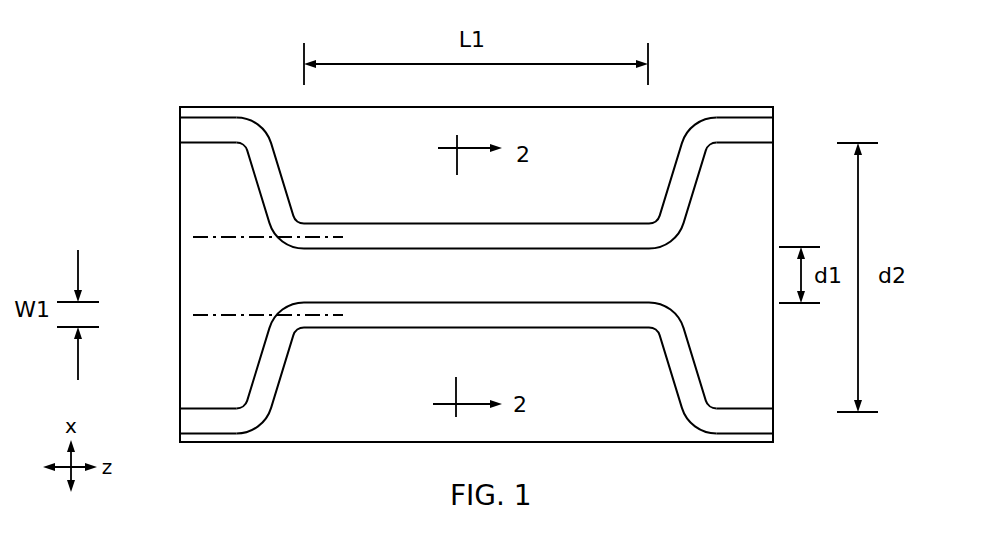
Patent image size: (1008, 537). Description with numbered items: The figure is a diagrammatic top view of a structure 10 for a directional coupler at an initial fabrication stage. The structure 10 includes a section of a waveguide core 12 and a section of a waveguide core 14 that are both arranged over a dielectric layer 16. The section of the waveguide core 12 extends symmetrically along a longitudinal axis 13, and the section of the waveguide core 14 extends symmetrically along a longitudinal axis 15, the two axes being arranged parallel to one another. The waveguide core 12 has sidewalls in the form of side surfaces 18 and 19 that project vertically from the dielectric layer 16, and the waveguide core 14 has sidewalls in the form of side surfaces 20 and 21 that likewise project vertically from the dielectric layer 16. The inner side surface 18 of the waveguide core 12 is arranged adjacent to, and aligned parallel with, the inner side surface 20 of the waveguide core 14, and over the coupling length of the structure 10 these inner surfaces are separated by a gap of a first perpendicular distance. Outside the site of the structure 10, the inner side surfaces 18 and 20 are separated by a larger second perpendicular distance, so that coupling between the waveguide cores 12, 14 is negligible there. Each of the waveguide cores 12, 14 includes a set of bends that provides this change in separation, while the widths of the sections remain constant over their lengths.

The structure 10 is at (152, 62).
The waveguide core 12 is at (755, 130).
The longitudinal axis 13 is at (193, 237).
The waveguide core 14 is at (738, 419).
The longitudinal axis 15 is at (193, 315).
The dielectric layer 16 is at (192, 163).
The side surface 18 is at (425, 248).
The side surface 19 is at (370, 223).
The side surface 20 is at (535, 303).
The side surface 21 is at (597, 328).